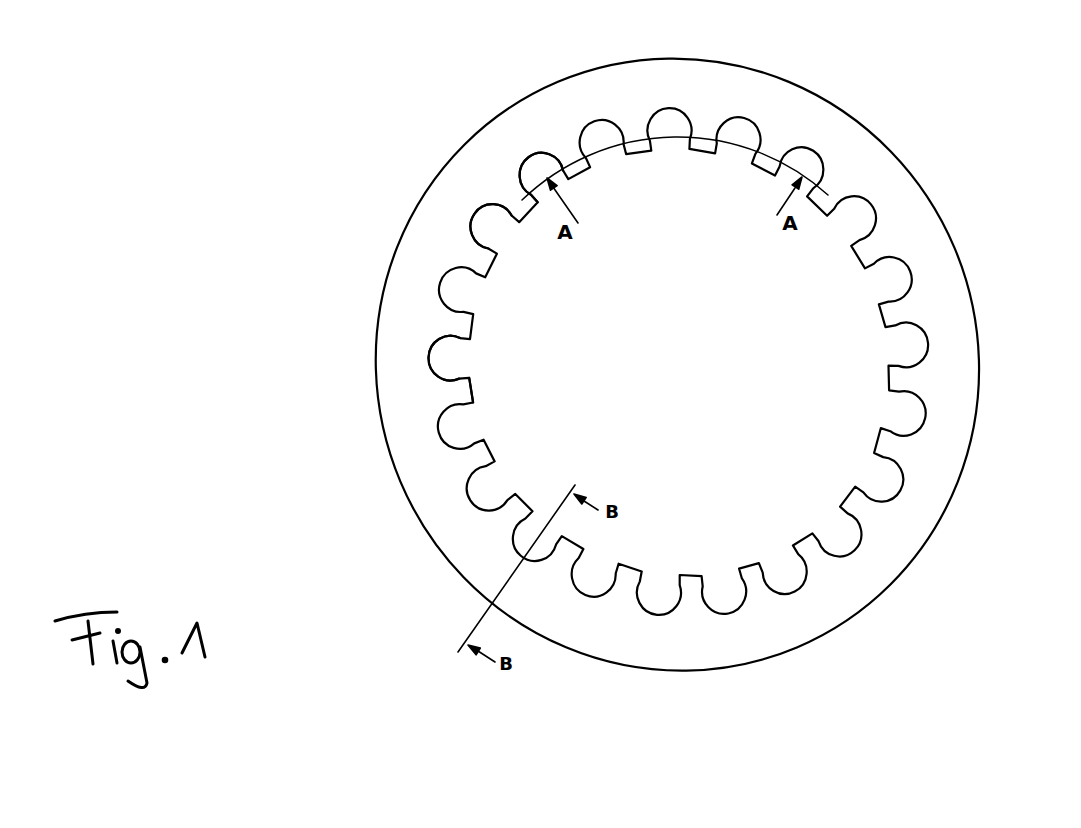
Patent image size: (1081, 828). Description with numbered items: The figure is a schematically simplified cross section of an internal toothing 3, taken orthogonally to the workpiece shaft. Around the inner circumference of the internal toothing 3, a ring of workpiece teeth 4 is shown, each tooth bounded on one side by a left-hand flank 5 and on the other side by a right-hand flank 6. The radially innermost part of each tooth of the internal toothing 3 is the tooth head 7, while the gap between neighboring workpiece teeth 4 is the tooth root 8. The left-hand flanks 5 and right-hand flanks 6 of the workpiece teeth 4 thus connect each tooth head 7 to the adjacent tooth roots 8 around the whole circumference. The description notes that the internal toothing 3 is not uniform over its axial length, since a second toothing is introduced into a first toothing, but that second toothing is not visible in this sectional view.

The internal toothing 3 is at (907, 132).
The workpiece teeth 4 is at (470, 462).
The left-hand flanks 5 is at (522, 183).
The right-hand flanks 6 is at (457, 267).
The tooth head 7 is at (470, 390).
The tooth root 8 is at (427, 357).